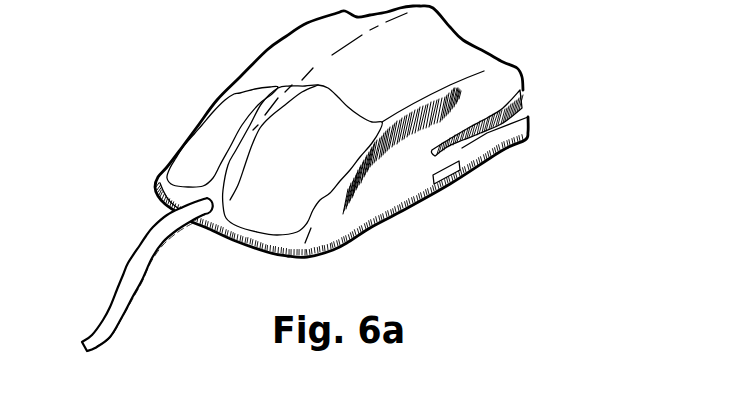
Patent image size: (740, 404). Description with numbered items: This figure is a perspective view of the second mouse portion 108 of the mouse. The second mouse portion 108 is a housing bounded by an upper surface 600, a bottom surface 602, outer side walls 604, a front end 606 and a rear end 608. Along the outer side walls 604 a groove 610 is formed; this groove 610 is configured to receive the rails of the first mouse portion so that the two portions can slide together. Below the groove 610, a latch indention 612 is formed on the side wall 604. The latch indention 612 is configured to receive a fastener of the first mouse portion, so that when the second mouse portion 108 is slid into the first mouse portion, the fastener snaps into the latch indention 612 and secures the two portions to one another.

The upper surface 600 is at (435, 63).
The front end 606 is at (518, 72).
The groove 610 is at (517, 107).
The second mouse portion 108 is at (551, 134).
The latch indention 612 is at (465, 172).
The outer side walls 604 is at (411, 205).
The bottom surface 602 is at (367, 238).
The rear end 608 is at (173, 192).